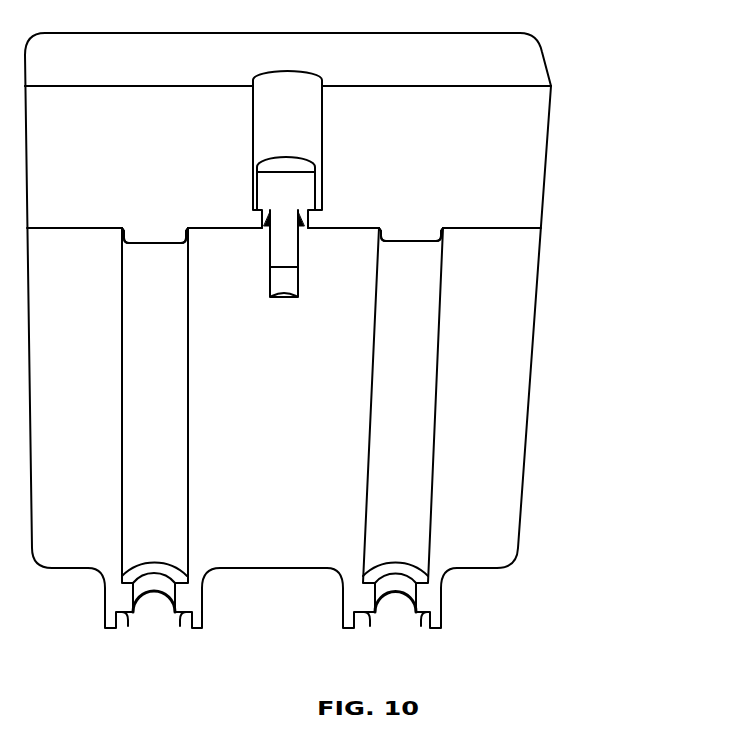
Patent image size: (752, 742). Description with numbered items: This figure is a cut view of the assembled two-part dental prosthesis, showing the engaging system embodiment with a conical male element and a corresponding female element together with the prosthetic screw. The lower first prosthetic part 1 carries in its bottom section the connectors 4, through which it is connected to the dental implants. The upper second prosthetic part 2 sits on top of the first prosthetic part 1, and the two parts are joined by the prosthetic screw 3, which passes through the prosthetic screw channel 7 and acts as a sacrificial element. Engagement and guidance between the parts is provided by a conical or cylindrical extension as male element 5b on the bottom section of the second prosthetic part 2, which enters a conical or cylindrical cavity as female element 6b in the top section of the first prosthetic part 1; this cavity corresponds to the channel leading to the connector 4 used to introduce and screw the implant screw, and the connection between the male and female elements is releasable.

The first prosthetic part 1 is at (448, 412).
The second prosthetic part 2 is at (410, 159).
The prosthetic screw 3 is at (282, 233).
The connector 4 is at (427, 610).
The conical or cylindrical extension as male element 5b is at (415, 240).
The conical or cylindrical cavity as female element 6b is at (415, 240).
The prosthetic screw channel 7 is at (275, 107).